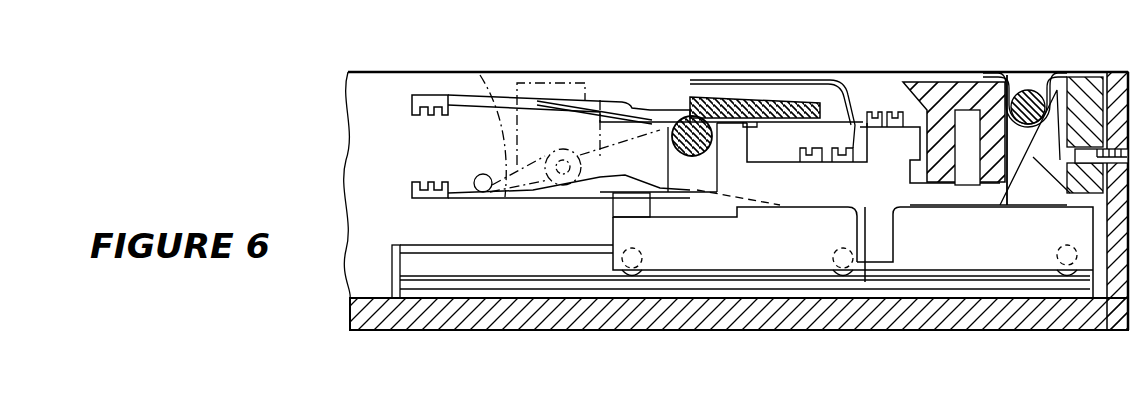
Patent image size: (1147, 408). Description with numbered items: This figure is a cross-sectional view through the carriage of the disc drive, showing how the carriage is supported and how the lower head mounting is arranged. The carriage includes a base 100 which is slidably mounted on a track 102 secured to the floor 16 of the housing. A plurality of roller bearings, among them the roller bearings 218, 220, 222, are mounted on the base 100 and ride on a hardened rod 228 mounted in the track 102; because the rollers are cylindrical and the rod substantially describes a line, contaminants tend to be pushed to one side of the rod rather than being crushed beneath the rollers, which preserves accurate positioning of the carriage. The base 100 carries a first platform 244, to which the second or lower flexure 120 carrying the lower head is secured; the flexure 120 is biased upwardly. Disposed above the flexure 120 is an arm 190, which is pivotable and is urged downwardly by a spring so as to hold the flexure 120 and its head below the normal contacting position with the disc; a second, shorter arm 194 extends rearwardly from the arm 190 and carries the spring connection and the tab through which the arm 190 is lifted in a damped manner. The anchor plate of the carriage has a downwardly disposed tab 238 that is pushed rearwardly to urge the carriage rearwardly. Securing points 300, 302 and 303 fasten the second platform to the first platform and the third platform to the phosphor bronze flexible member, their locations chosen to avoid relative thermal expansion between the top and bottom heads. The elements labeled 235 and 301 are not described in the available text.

The floor 16 is at (932, 312).
The base 100 is at (1052, 237).
The track 102 is at (1007, 288).
The second flexure 120 is at (507, 197).
The arm 190 is at (482, 77).
The second shorter arm 194 is at (614, 82).
The roller bearing 218 is at (633, 272).
The roller bearing 220 is at (845, 272).
The roller bearing 222 is at (1067, 272).
The hardened rod 228 is at (467, 258).
The pin 235 is at (958, 210).
The downwardly disposed tab 238 is at (865, 282).
The first platform 244 is at (685, 203).
The securing point 300 is at (880, 110).
The contact housing 301 is at (865, 130).
The securing point 302 is at (830, 127).
The securing point 303 is at (777, 93).